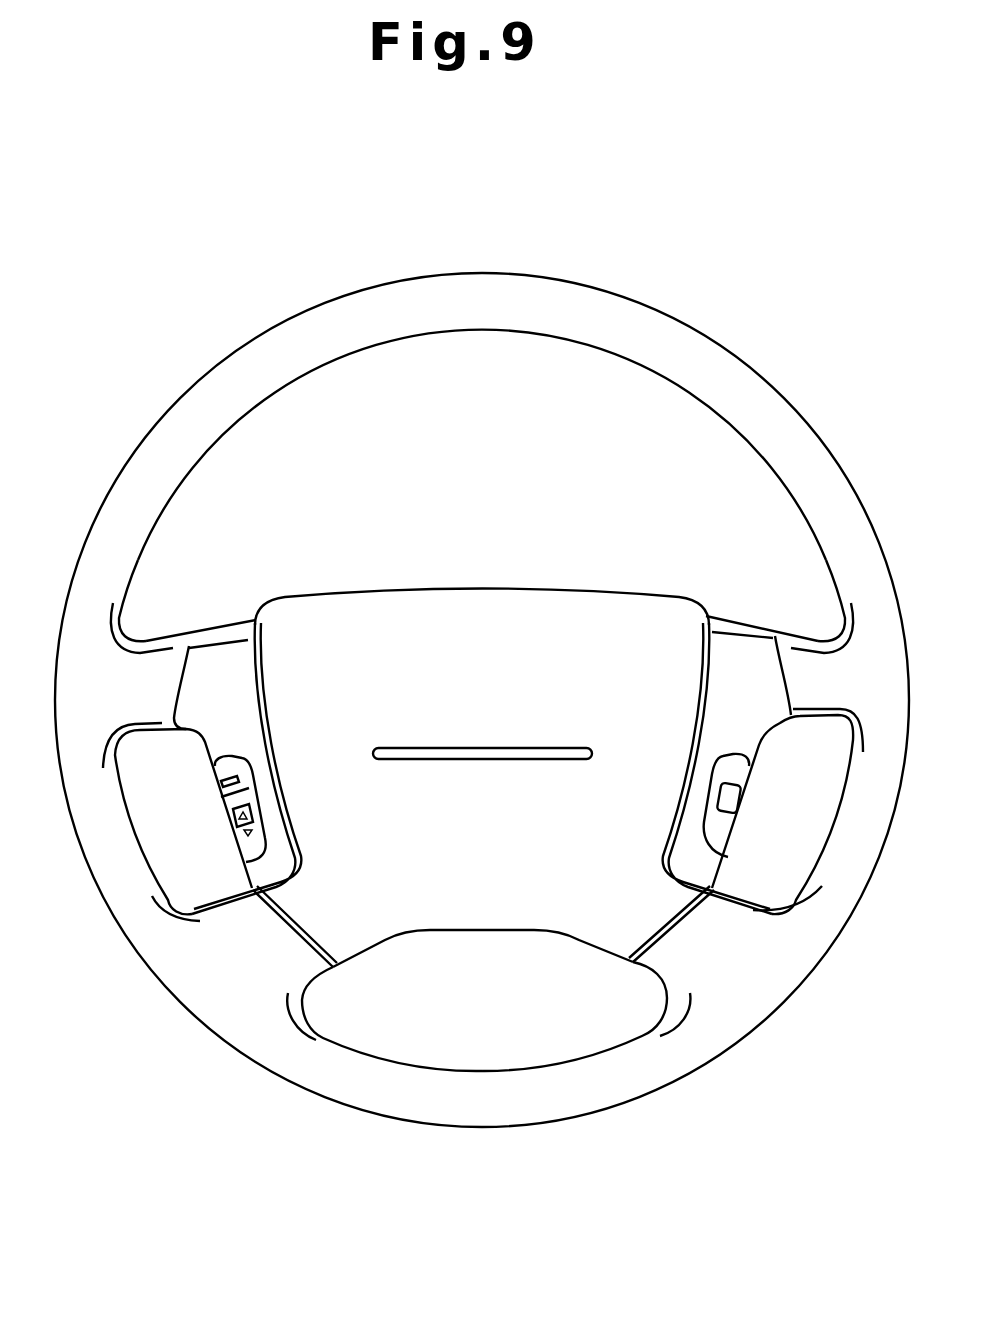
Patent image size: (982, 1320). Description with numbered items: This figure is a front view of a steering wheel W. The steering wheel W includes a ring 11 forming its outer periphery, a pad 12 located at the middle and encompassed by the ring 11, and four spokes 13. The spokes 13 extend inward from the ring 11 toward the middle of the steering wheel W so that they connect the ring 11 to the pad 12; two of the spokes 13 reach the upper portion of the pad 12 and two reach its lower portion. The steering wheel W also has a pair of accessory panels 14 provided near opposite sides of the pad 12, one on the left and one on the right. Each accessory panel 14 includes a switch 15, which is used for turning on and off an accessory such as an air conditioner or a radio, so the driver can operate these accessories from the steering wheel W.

The steering wheel W is at (690, 282).
The ring 11 is at (804, 395).
The pad 12 is at (488, 573).
The spokes 13 is at (160, 633).
The accessory panel 14 is at (248, 609).
The switch 15 is at (214, 812).